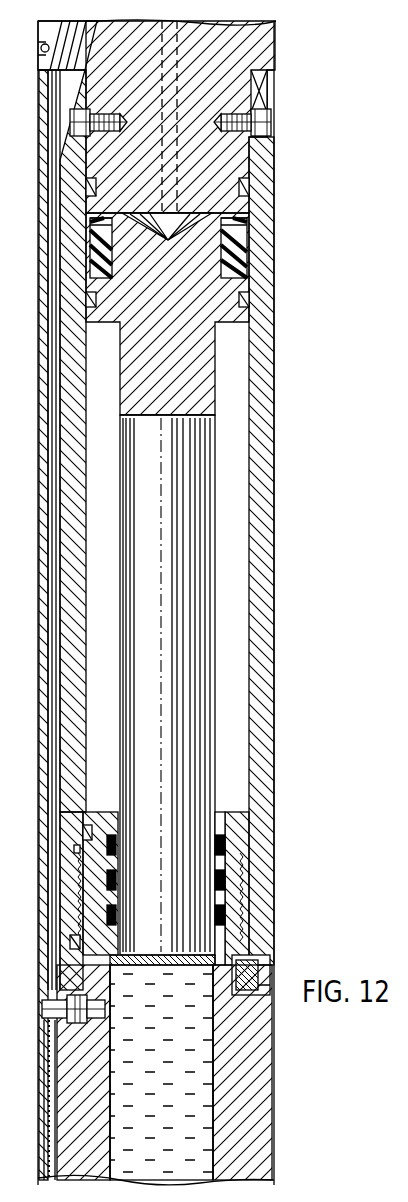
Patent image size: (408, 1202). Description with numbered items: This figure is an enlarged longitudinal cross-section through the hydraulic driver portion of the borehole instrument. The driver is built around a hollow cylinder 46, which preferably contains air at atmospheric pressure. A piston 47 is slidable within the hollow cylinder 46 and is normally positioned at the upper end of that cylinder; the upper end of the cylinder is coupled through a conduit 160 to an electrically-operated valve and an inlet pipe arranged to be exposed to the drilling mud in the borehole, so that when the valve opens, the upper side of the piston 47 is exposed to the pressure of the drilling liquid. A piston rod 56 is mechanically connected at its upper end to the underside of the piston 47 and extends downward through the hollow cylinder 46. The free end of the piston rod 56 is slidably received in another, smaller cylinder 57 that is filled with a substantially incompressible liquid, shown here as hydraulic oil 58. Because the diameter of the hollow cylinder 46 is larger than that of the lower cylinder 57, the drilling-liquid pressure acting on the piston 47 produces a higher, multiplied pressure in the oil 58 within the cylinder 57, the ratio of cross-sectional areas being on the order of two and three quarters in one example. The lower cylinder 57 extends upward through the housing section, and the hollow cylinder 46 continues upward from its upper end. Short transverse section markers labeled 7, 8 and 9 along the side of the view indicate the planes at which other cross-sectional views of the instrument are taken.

The conduit 160 is at (178, 58).
The piston 47 is at (240, 314).
The hollow cylinder 46 is at (224, 523).
The piston rod 56 is at (215, 421).
The cylinder 57 is at (216, 1096).
The hydraulic oil 58 is at (197, 1133).
The section line FIG. 7 is at (402, 467).
The section line FIG. 8 is at (400, 577).
The section line FIG. 9 is at (400, 698).